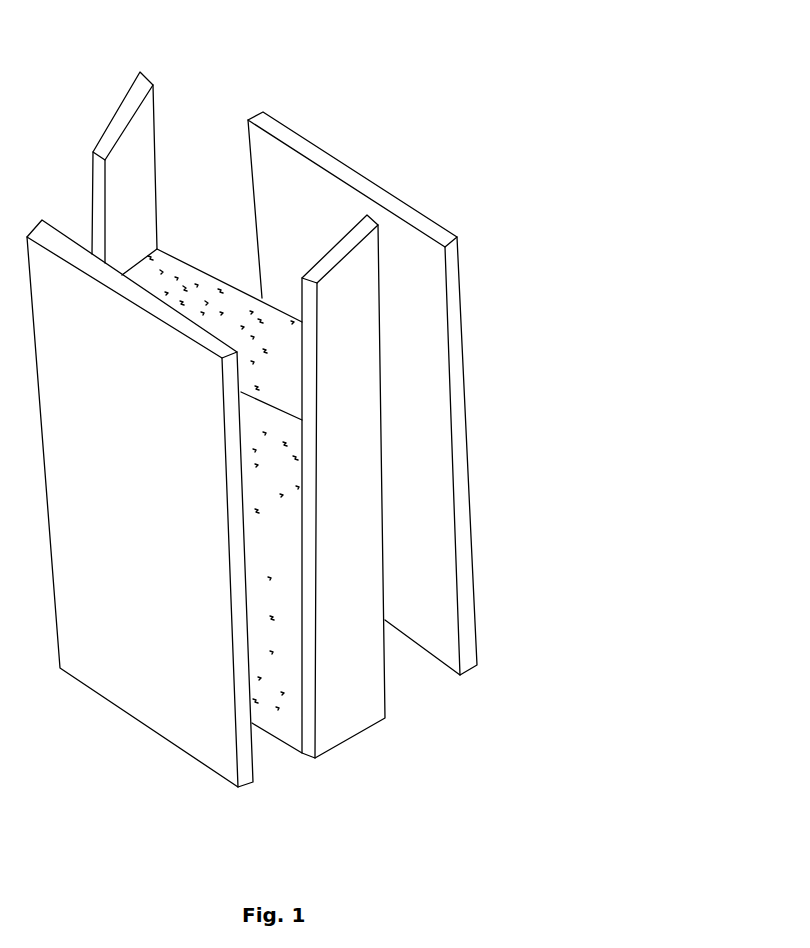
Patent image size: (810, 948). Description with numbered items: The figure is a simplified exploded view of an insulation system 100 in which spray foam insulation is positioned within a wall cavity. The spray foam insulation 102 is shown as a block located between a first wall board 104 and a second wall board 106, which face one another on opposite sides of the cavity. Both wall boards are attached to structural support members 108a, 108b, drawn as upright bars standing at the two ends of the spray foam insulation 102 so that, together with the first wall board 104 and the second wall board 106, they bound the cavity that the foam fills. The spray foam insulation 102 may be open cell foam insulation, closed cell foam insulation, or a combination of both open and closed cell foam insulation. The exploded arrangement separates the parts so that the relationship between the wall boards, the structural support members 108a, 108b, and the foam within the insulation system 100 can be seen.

The insulation system 100 is at (468, 130).
The spray foam insulation 102 is at (235, 318).
The first wall board 104 is at (120, 673).
The second wall board 106 is at (427, 373).
The structural support member 108a is at (363, 272).
The structural support member 108b is at (137, 118).